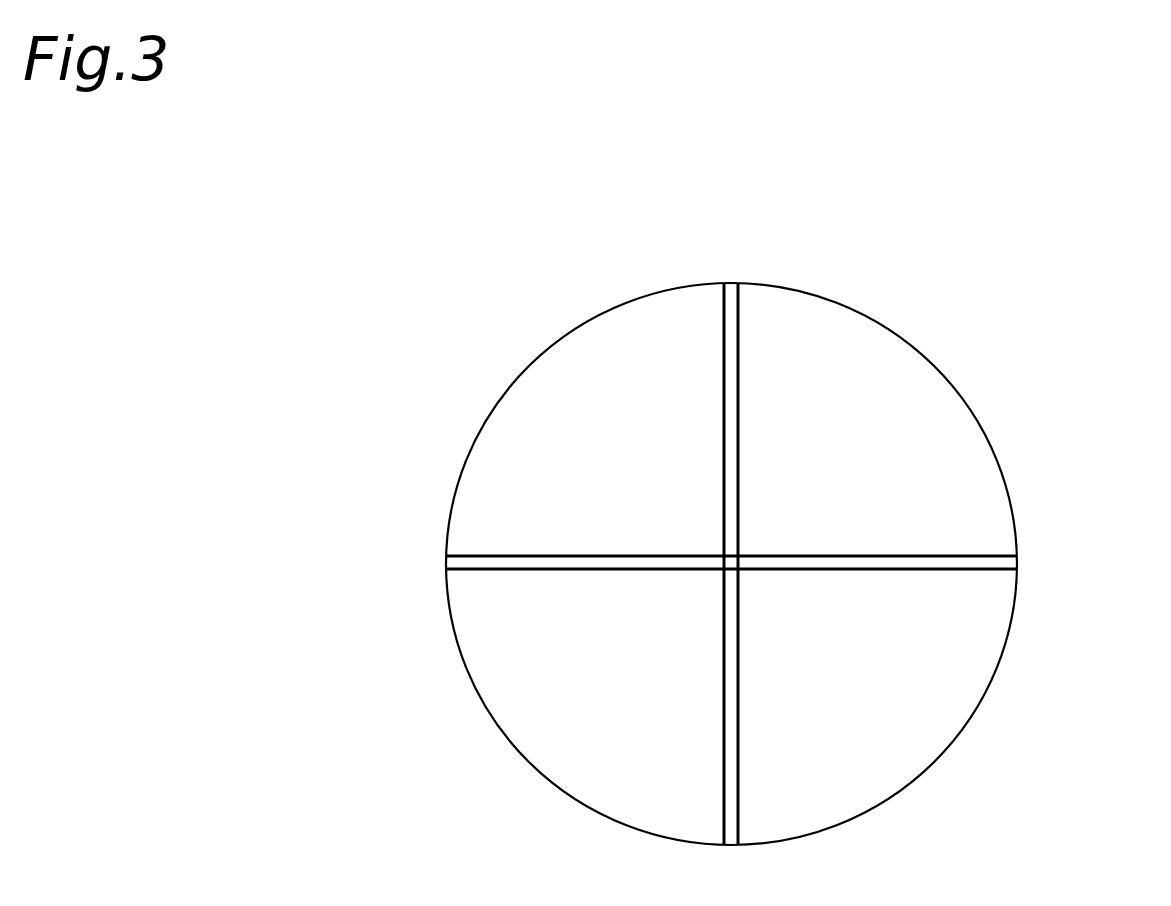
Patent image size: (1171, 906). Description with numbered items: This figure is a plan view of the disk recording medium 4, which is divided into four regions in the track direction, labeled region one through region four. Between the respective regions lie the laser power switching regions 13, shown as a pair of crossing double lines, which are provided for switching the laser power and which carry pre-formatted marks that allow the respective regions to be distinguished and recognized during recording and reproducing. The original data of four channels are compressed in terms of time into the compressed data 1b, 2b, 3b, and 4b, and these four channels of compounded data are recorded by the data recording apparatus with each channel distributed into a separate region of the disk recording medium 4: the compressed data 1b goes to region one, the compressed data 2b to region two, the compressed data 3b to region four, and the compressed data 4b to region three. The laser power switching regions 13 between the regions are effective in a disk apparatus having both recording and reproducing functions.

The disk recording medium 4 is at (985, 432).
The laser power switching regions 13 is at (1017, 563).
The compressed data of first channel 1b is at (912, 380).
The compressed data of second channel 2b is at (908, 746).
The compressed data of third channel 3b is at (560, 380).
The compressed data of fourth channel 4b is at (557, 747).